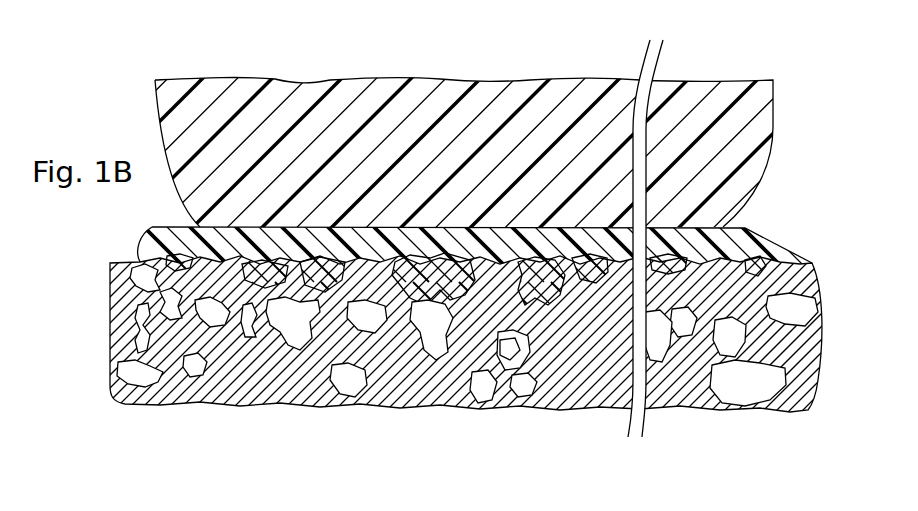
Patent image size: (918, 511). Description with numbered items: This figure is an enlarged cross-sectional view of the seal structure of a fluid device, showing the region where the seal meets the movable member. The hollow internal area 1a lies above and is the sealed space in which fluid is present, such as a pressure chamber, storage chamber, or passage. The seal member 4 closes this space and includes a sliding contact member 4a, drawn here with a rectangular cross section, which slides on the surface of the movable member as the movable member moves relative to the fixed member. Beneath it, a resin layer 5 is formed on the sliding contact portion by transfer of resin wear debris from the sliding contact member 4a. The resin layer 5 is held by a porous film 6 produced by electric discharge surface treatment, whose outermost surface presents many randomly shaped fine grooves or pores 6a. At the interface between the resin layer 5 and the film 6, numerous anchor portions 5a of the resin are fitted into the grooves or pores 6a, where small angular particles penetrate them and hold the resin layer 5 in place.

The hollow internal area 1a is at (810, 136).
The seal member 4 is at (492, 234).
The sliding contact member 4a is at (158, 121).
The resin layer 5 is at (756, 233).
The anchor portions 5a is at (277, 285).
The porous film 6 is at (700, 396).
The grooves or pores 6a is at (268, 288).